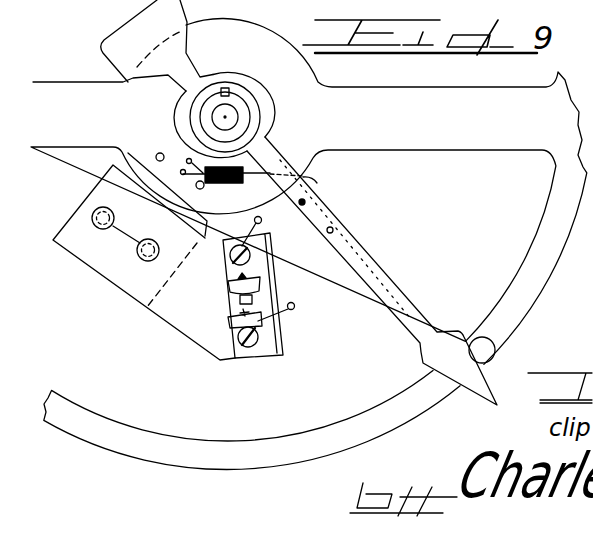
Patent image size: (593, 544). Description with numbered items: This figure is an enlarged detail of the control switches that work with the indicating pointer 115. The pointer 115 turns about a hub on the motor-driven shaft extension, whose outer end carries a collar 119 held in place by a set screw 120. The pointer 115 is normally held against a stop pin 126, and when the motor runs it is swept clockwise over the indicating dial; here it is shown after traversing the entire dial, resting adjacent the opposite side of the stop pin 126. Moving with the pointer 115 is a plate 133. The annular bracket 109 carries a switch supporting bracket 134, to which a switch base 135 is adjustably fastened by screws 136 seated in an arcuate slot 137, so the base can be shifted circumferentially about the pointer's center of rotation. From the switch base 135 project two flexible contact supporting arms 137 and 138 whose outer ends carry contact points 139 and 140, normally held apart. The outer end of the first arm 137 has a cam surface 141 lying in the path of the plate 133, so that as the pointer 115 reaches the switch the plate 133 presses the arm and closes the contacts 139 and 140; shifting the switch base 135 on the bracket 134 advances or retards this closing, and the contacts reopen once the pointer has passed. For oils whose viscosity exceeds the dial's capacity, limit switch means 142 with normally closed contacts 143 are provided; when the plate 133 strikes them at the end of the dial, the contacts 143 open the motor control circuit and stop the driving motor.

The annular bracket 109 is at (309, 234).
The pointer 115 is at (398, 302).
The collar 119 is at (237, 111).
The set screw 120 is at (228, 89).
The stop pin 126 is at (488, 349).
The plate 133 is at (333, 220).
The switch supporting bracket 134 is at (118, 176).
The switch base 135 is at (82, 242).
The screws 136 is at (92, 217).
The arcuate slot / flexible contact supporting arm 137 is at (119, 236).
The flexible contact supporting arm 138 is at (260, 316).
The contact point 139 is at (243, 298).
The contact point 140 is at (235, 315).
The cam surface 141 is at (241, 277).
The limit switch means 142 is at (217, 186).
The switch contacts 143 is at (288, 170).